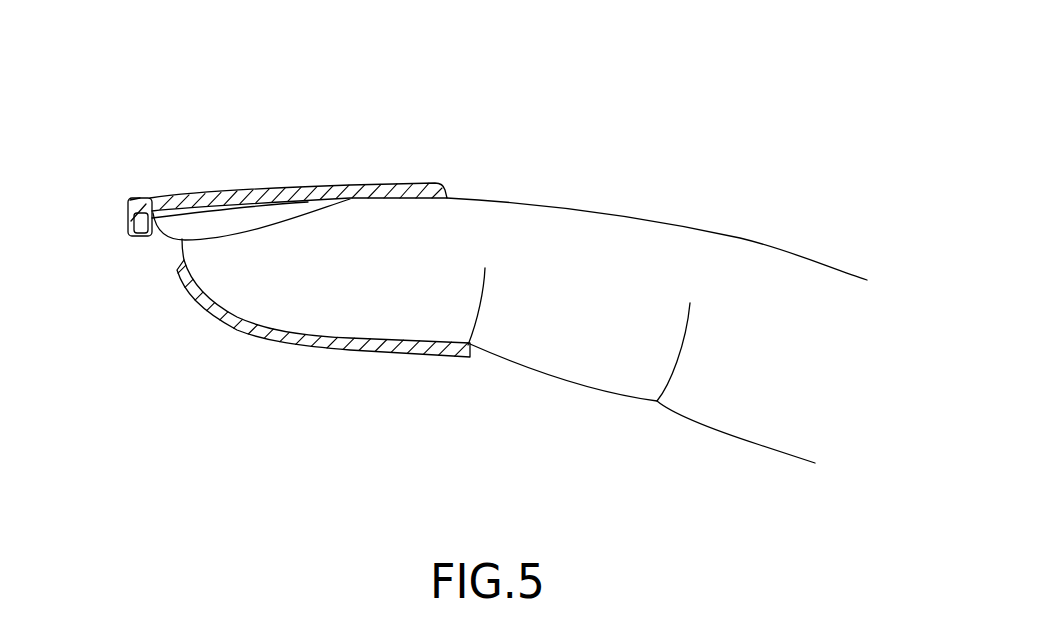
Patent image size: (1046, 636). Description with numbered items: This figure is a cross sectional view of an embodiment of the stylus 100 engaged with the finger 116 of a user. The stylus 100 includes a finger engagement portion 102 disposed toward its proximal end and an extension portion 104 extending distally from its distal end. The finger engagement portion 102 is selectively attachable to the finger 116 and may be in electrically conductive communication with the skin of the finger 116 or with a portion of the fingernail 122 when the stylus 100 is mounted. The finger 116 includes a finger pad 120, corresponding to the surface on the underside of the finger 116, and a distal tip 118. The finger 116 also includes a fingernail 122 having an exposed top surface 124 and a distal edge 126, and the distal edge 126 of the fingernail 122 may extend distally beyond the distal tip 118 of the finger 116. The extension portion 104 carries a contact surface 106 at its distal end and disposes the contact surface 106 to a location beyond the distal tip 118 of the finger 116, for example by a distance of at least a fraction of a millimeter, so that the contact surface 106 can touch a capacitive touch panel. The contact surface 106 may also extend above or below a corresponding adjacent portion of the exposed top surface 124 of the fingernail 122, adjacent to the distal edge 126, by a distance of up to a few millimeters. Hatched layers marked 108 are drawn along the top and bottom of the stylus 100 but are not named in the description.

The stylus 100 is at (319, 125).
The finger engagement portion 102 is at (388, 144).
The extension portion 104 is at (174, 152).
The contact surface 106 is at (130, 220).
The sensor layer 108 is at (403, 193).
The finger 116 is at (627, 232).
The distal tip 118 is at (172, 258).
The finger pad 120 is at (298, 333).
The fingernail 122 is at (196, 224).
The exposed top surface 124 is at (233, 207).
The distal edge 126 is at (148, 198).